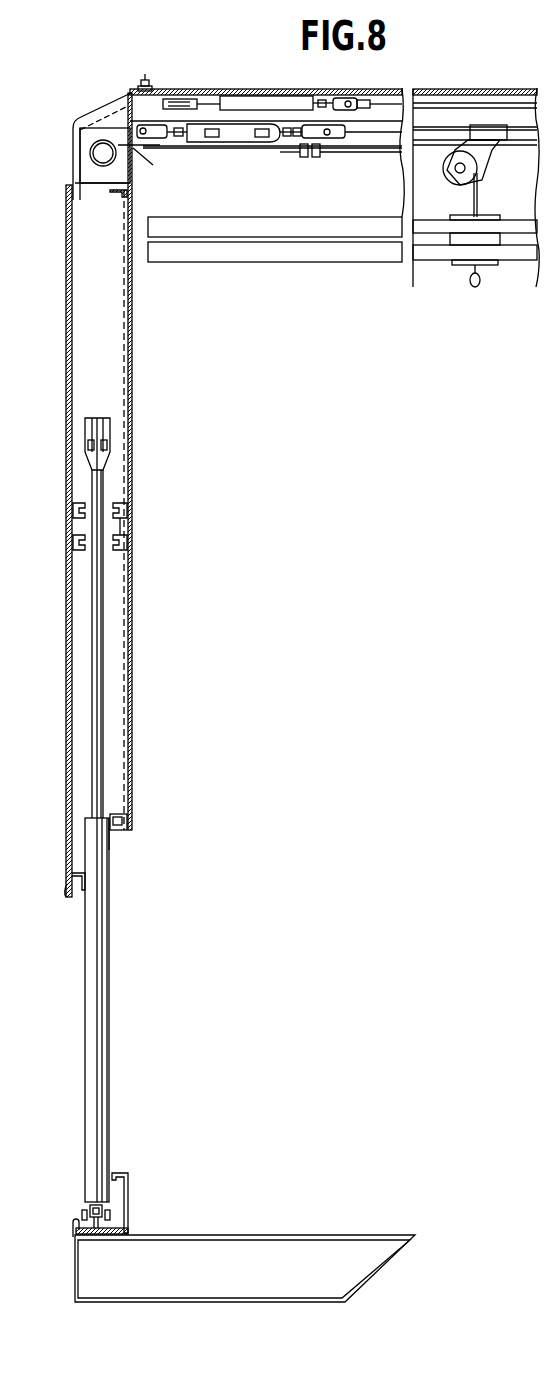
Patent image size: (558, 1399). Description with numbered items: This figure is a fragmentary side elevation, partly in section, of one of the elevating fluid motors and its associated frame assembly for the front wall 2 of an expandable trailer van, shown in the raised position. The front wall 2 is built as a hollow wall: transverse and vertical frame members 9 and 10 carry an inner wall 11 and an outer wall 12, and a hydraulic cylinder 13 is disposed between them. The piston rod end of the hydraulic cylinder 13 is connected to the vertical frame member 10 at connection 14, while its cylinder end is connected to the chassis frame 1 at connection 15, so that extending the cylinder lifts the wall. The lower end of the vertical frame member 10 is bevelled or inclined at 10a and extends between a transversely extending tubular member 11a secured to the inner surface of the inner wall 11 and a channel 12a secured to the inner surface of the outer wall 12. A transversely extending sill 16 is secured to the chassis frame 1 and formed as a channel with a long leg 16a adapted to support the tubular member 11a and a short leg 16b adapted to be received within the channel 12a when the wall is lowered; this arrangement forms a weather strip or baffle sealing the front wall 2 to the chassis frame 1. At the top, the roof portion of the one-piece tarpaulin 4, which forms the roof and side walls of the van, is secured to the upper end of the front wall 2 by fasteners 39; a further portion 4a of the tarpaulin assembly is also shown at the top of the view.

The chassis frame 1 is at (207, 1258).
The front wall 2 is at (62, 297).
The tarpaulin 4 is at (326, 92).
The upper rail section 4a is at (477, 90).
The transverse frame member 9 is at (133, 198).
The vertical frame member 10 is at (122, 656).
The bevelled lower end 10a is at (110, 838).
The inner wall 11 is at (133, 324).
The tubular member 11a is at (133, 812).
The outer wall 12 is at (65, 686).
The channel 12a is at (65, 892).
The hydraulic cylinder 13 is at (115, 1022).
The piston rod end connection 14 is at (102, 445).
The cylinder end connection 15 is at (92, 1218).
The sill 16 is at (136, 1232).
The long leg 16a is at (128, 1195).
The short leg 16b is at (75, 1232).
The fasteners 39 is at (150, 86).